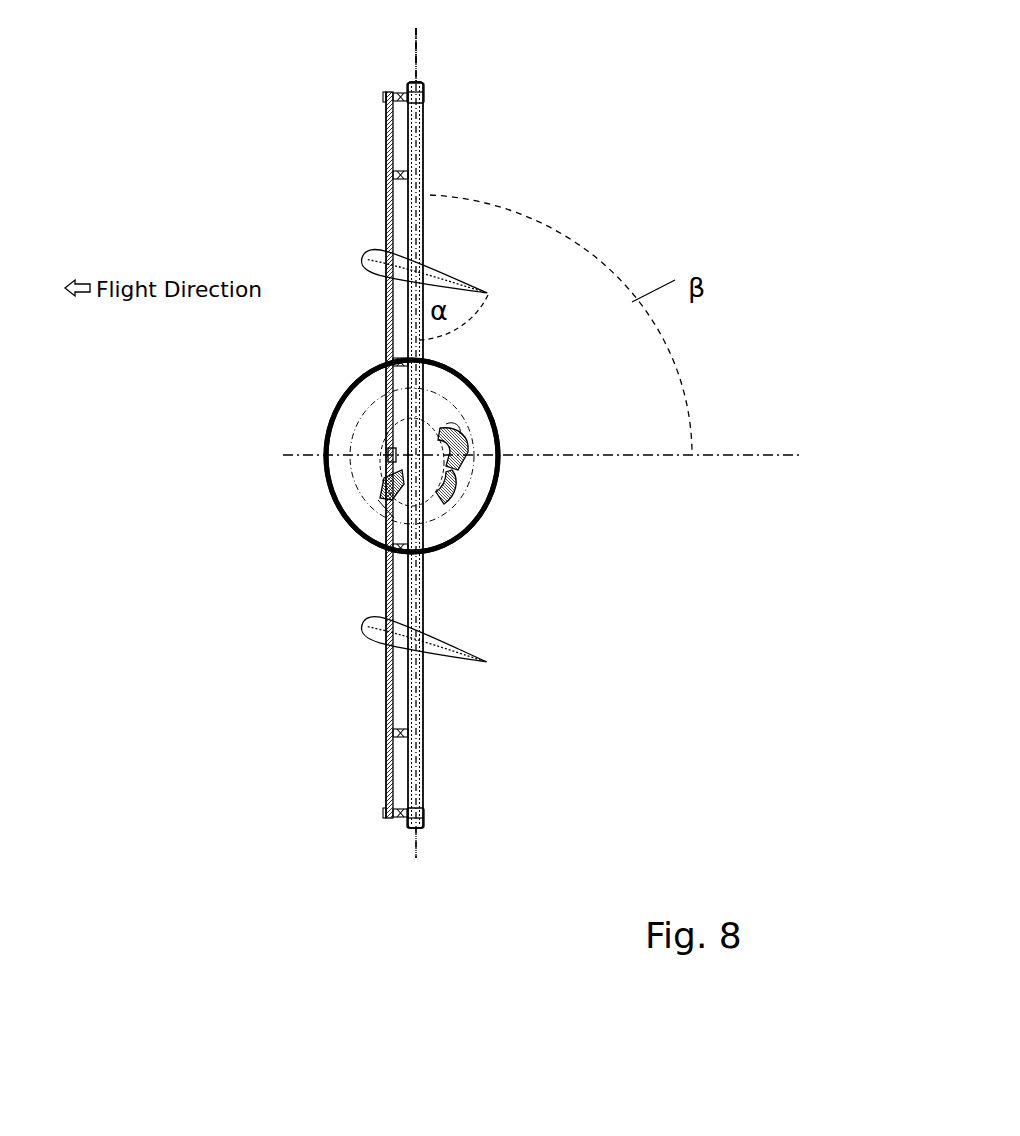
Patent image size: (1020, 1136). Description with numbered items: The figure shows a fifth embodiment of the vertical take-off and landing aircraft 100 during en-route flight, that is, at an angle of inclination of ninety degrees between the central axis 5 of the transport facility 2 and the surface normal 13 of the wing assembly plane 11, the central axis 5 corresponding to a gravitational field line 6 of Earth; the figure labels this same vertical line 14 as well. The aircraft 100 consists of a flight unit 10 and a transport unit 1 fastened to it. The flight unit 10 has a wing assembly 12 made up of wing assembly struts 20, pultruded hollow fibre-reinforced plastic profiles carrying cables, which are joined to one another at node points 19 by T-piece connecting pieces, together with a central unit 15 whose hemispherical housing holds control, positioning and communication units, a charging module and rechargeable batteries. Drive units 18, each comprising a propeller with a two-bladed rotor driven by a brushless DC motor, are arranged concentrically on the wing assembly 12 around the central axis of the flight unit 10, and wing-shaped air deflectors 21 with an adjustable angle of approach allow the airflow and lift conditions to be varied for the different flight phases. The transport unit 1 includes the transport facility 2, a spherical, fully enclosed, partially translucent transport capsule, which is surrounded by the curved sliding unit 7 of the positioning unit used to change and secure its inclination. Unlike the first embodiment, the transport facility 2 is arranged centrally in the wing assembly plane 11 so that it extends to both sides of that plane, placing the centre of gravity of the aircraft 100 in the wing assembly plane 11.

The aircraft 100 is at (184, 99).
The central axis 5 is at (415, 52).
The gravitational field line 6 is at (475, 23).
The wing assembly plane 11 is at (475, 23).
The pivot axis 14 is at (475, 23).
The node points 19 is at (425, 88).
The wing assembly 12 is at (425, 137).
The wing assembly struts 20 is at (465, 172).
The drive units 18 is at (388, 175).
The air deflectors 21 is at (368, 252).
The central unit 15 is at (348, 410).
The sliding unit 7 is at (467, 380).
The transport unit 1 is at (505, 404).
The transport facility 2 is at (483, 510).
The surface normal 13 is at (606, 460).
The flight unit 10 is at (305, 641).